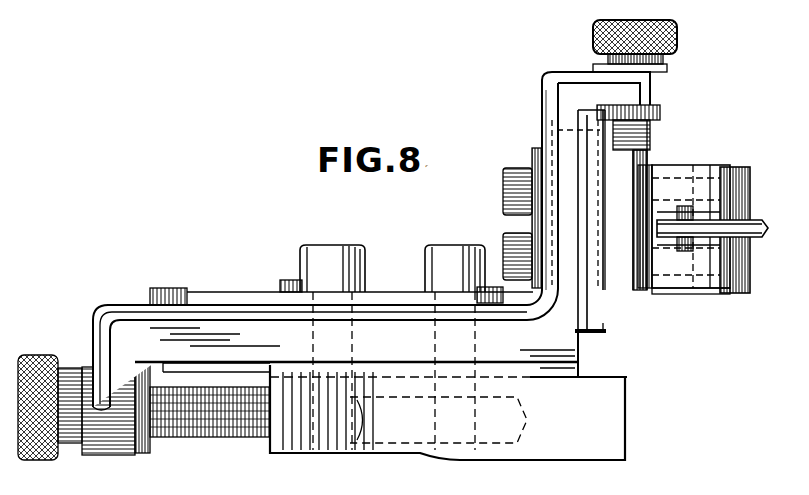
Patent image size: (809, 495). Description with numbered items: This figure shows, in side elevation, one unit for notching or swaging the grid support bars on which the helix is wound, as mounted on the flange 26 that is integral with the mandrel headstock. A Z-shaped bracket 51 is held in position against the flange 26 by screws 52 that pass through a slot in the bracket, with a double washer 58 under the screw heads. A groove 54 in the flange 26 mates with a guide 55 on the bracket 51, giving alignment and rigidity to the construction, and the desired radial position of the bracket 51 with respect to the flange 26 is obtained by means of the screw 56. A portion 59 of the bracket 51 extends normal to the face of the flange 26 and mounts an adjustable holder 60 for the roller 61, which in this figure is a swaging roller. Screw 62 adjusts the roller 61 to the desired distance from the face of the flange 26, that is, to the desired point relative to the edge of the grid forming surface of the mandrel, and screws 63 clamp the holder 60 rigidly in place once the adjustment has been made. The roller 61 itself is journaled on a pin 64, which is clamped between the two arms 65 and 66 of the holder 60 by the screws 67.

The flange 26 is at (610, 407).
The Z-shaped bracket 51 is at (540, 344).
The screws 52 is at (424, 258).
The groove 54 is at (613, 376).
The guide 55 is at (190, 367).
The screw 56 is at (215, 438).
The double washer 58 is at (283, 279).
The portion of the bracket 59 is at (560, 137).
The adjustable holder 60 is at (608, 290).
The swaging roller 61 is at (751, 238).
The screw 62 is at (651, 134).
The screws 63 is at (500, 240).
The pin 64 is at (727, 293).
The arm 65 is at (677, 167).
The arm 66 is at (694, 291).
The screws 67 is at (741, 296).